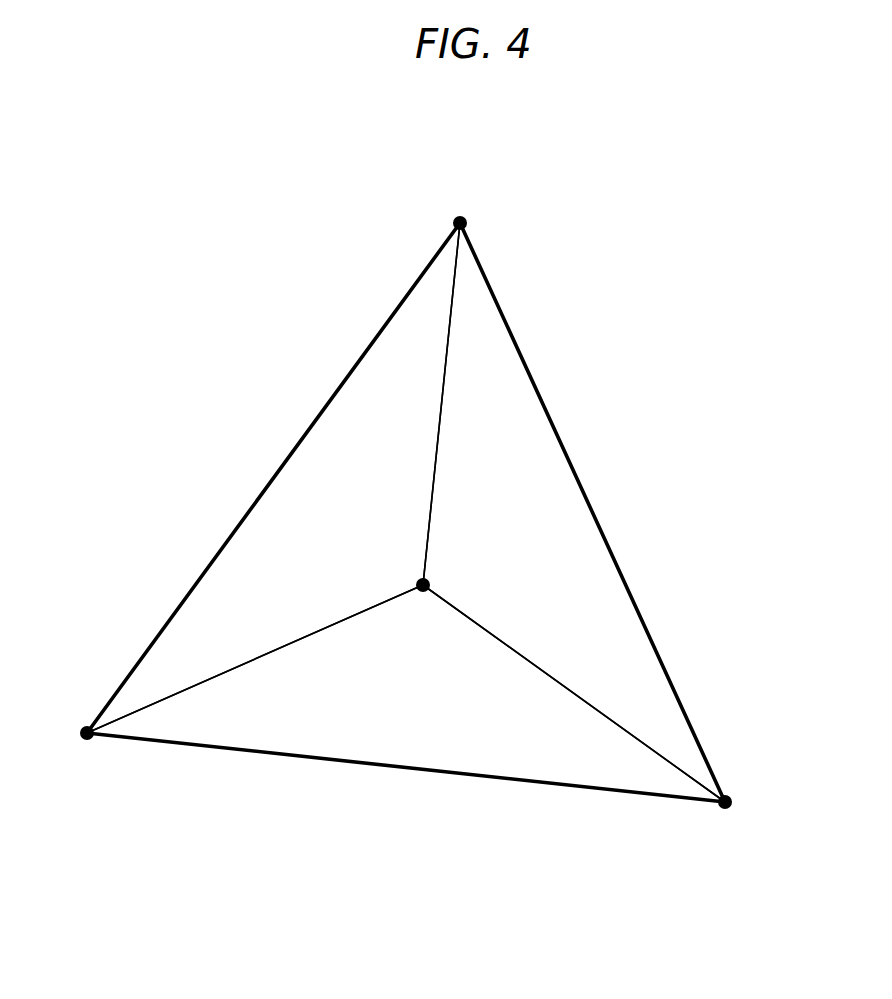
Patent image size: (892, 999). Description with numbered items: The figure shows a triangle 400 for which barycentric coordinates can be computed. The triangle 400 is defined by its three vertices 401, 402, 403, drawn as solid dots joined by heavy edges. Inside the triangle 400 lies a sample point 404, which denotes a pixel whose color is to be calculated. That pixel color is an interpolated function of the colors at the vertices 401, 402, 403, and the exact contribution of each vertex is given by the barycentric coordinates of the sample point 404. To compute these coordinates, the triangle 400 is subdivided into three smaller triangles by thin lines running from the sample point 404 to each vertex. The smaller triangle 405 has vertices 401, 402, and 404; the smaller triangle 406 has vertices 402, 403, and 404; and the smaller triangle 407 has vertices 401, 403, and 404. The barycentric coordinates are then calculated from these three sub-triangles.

The triangle 400 is at (628, 442).
The vertex 401 is at (80, 737).
The vertex 402 is at (455, 215).
The vertex 403 is at (730, 810).
The sample point 404 is at (430, 583).
The smaller triangle 405 is at (367, 531).
The smaller triangle 406 is at (561, 546).
The smaller triangle 407 is at (438, 719).